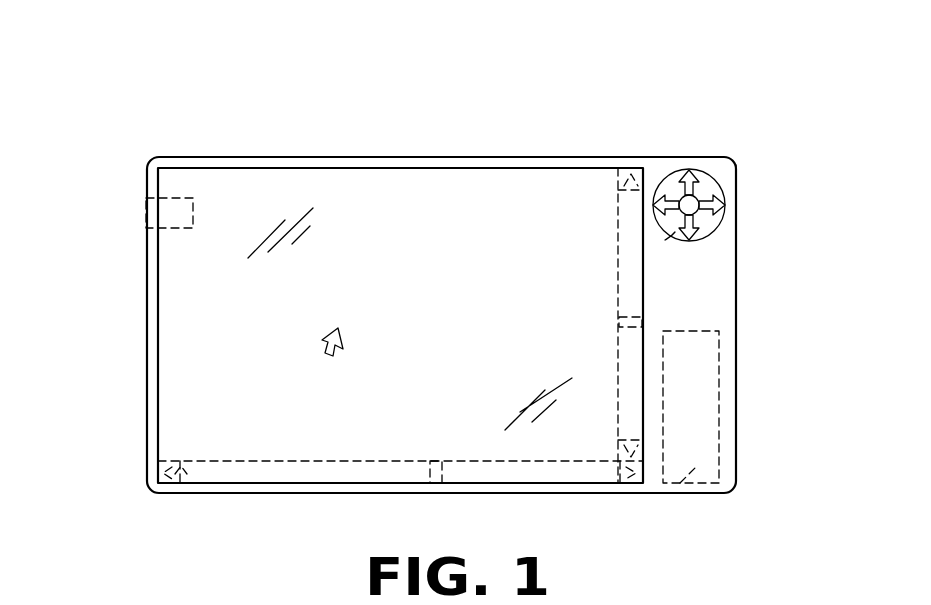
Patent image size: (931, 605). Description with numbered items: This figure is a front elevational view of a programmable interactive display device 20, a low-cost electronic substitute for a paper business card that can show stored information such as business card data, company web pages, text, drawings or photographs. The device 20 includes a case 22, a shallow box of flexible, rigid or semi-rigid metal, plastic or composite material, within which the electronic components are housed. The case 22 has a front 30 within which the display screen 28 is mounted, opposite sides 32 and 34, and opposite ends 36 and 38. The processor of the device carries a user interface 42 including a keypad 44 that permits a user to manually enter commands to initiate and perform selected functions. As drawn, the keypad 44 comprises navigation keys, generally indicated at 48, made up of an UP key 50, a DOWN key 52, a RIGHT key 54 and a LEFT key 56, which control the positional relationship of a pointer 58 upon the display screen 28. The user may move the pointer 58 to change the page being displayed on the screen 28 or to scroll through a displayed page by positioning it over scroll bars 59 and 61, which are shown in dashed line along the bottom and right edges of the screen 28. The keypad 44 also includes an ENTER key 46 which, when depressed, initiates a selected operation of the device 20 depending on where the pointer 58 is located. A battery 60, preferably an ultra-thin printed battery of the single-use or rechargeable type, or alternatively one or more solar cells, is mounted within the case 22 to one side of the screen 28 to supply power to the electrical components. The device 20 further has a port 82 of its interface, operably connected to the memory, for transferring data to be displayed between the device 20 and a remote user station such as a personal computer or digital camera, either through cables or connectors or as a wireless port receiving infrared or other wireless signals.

The programmable interactive display device 20 is at (645, 68).
The case 22 is at (357, 157).
The display screen 28 is at (464, 195).
The front 30 is at (727, 450).
The side 32 is at (597, 158).
The side 34 is at (530, 493).
The end 36 is at (146, 318).
The end 38 is at (737, 397).
The user interface 42 is at (737, 180).
The keypad 44 is at (707, 228).
The ENTER key 46 is at (660, 226).
The navigation keys 48 is at (706, 168).
The UP key 50 is at (727, 170).
The DOWN key 52 is at (672, 236).
The RIGHT key 54 is at (722, 228).
The LEFT key 56 is at (659, 176).
The pointer 58 is at (334, 357).
The scroll bar 59 is at (250, 462).
The battery 60 is at (680, 488).
The scroll bar 61 is at (618, 270).
The port 82 is at (140, 205).